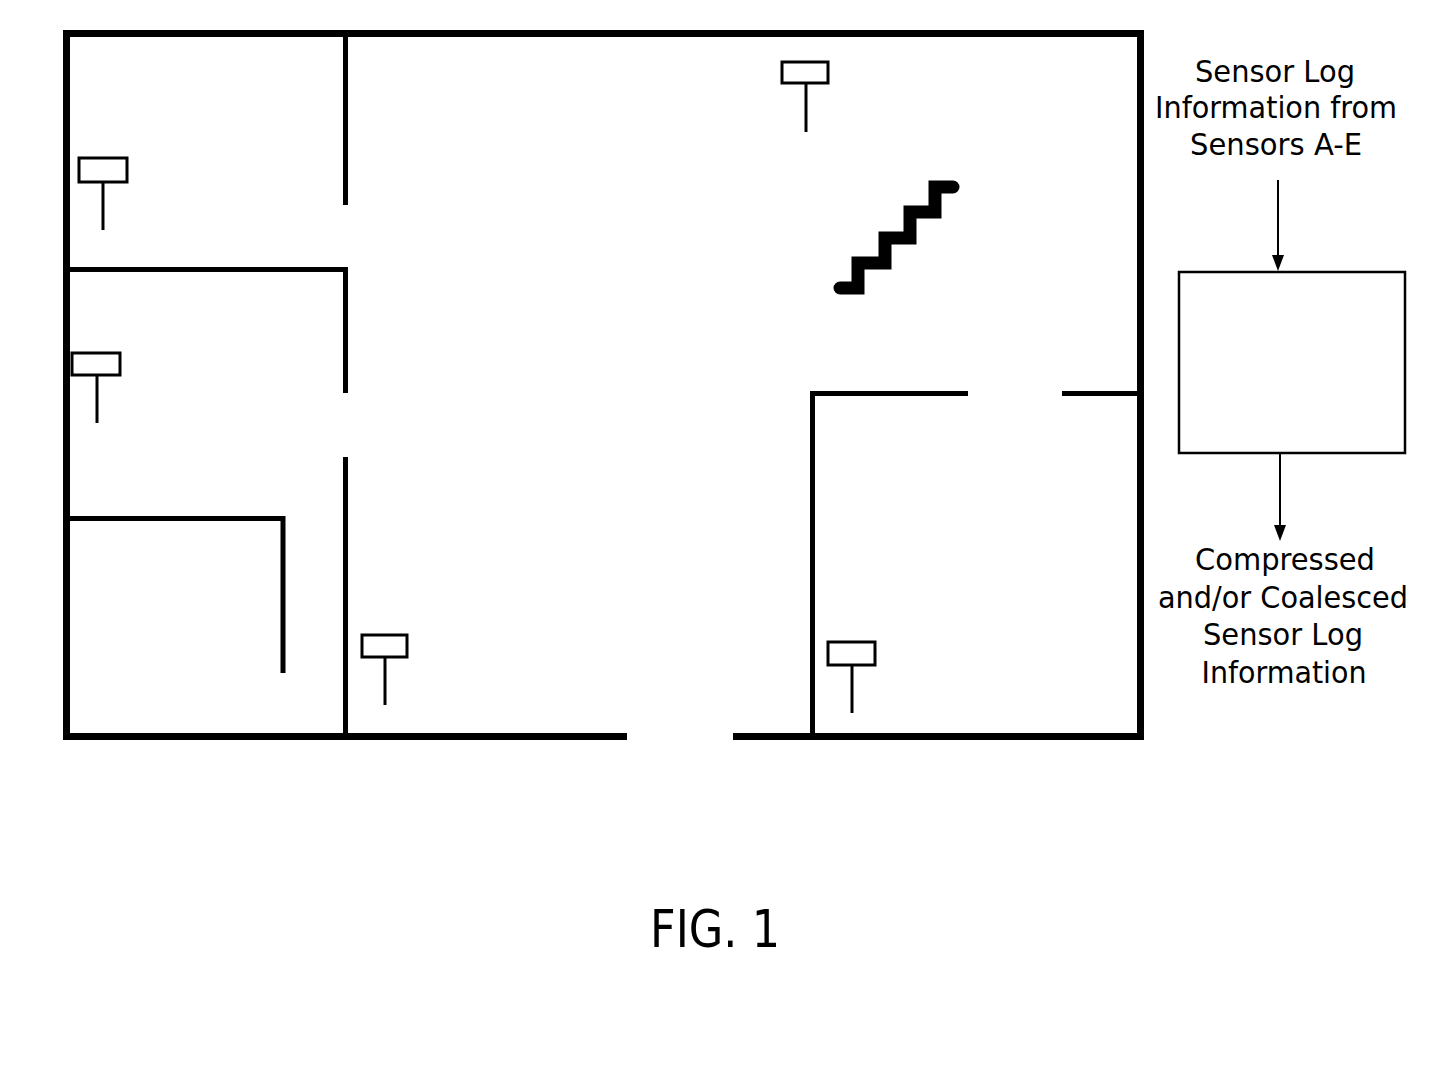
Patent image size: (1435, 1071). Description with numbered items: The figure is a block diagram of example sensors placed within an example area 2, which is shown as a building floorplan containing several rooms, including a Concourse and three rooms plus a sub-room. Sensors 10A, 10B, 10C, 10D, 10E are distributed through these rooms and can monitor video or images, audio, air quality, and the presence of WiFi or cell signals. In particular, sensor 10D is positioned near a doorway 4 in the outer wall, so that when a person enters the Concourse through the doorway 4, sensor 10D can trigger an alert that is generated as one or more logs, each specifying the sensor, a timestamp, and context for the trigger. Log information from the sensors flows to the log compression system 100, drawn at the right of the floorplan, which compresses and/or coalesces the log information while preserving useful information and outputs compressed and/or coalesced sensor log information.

The area 2 is at (436, 98).
The doorway 4 is at (632, 748).
The sensor 10A is at (983, 126).
The sensor 10B is at (174, 220).
The sensor 10C is at (171, 406).
The sensor 10D is at (468, 686).
The sensor 10E is at (919, 698).
The log compression system 100 is at (1400, 451).